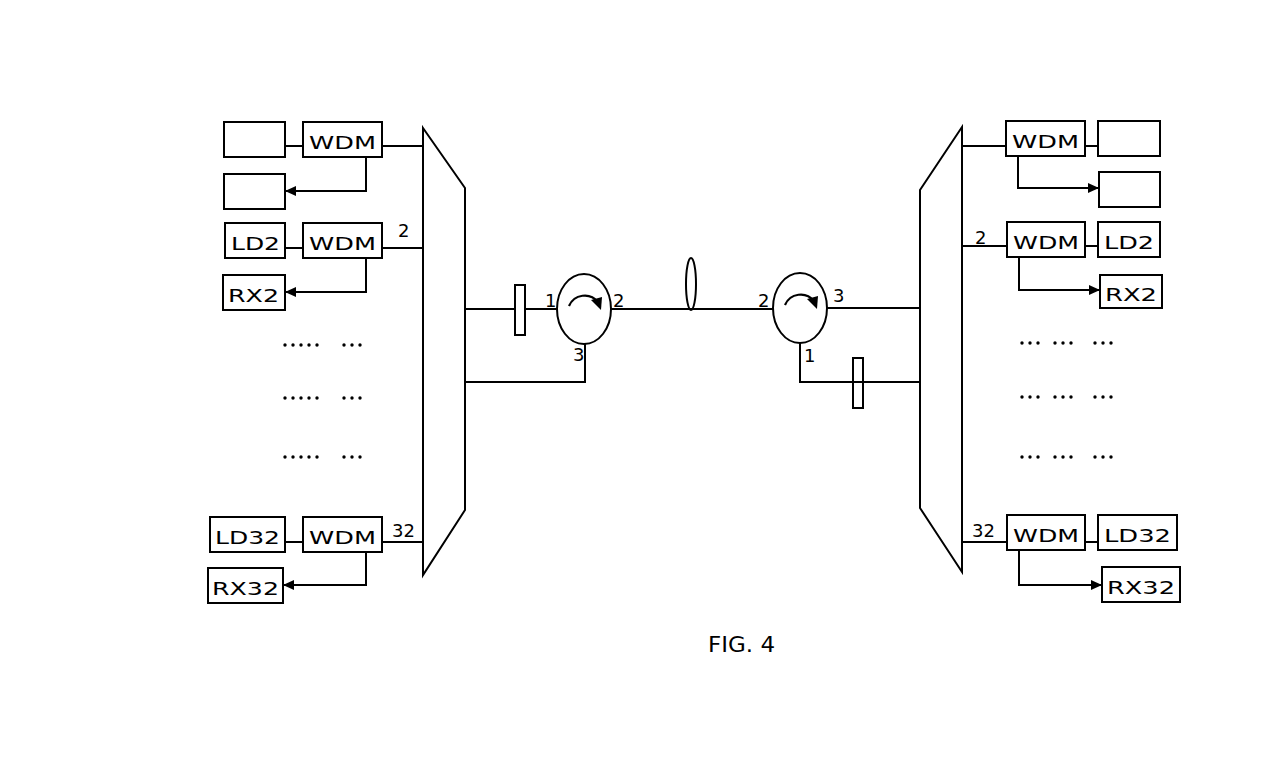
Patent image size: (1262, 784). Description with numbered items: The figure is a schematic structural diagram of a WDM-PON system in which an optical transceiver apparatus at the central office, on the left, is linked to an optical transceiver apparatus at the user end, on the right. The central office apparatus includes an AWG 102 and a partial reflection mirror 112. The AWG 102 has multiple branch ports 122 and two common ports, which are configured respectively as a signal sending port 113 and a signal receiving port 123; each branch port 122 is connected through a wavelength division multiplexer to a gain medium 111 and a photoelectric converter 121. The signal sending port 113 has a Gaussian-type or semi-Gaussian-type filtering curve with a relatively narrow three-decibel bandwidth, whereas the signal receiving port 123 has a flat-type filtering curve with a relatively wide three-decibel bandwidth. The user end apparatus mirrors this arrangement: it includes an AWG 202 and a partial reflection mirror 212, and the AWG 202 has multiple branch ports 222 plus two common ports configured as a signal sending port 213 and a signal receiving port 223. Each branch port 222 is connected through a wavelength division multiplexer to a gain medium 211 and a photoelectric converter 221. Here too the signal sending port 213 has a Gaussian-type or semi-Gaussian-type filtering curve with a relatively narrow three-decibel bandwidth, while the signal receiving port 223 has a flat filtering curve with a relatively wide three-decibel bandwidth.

The AWG 102 is at (443, 175).
The gain medium 111 is at (243, 122).
The partial reflection mirror 112 is at (520, 285).
The signal sending port 113 is at (483, 308).
The photoelectric converter 121 is at (227, 192).
The branch port 122 is at (396, 143).
The signal receiving port 123 is at (512, 383).
The AWG 202 is at (938, 177).
The gain medium 211 is at (1155, 120).
The partial reflection mirror 212 is at (857, 410).
The signal sending port 213 is at (903, 385).
The photoelectric converter 221 is at (1160, 187).
The branch port 222 is at (992, 143).
The signal receiving port 223 is at (903, 308).